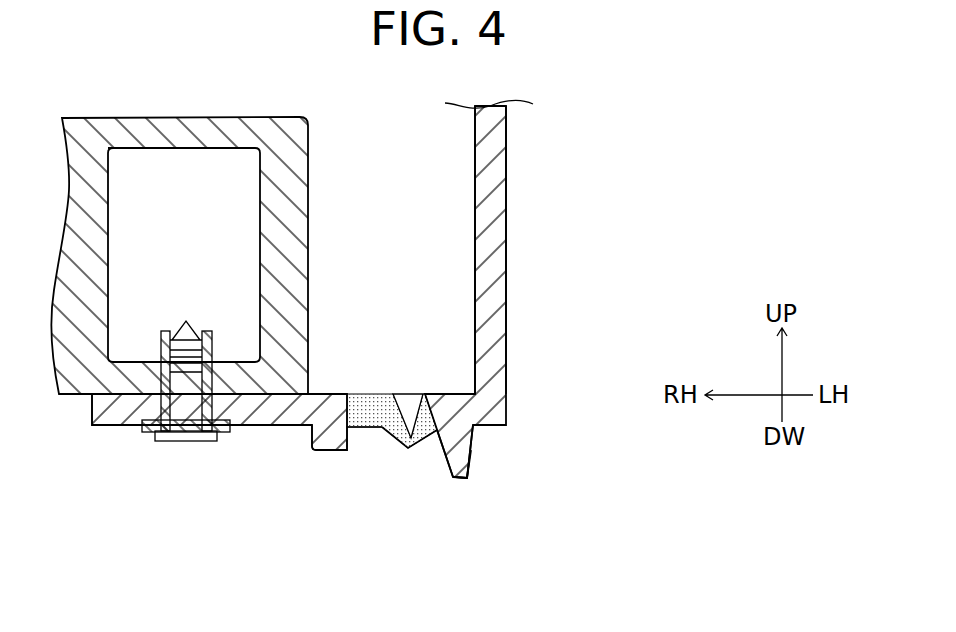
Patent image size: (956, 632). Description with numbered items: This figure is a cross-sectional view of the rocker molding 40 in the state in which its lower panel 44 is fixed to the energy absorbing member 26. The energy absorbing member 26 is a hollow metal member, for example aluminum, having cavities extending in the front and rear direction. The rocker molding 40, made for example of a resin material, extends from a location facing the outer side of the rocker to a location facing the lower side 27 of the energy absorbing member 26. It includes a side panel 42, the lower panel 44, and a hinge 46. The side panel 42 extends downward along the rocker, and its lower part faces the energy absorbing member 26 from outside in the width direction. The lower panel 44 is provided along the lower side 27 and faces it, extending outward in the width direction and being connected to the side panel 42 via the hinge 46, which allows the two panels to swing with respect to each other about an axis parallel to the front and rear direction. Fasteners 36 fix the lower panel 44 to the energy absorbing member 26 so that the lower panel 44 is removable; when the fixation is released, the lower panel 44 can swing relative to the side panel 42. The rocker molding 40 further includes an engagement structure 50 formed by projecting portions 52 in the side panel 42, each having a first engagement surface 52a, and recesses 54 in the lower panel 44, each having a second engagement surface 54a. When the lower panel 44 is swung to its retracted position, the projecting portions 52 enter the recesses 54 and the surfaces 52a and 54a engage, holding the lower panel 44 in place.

The energy absorbing member 26 is at (293, 137).
The lower side 27 is at (264, 498).
The fastener 36 is at (185, 428).
The rocker molding 40 is at (562, 325).
The side panel 42 is at (492, 265).
The lower panel 44 is at (112, 420).
The hinge 46 is at (413, 397).
The engagement structure 50 is at (411, 501).
The projecting portion 52 is at (468, 483).
The first engagement surface 52a is at (480, 461).
The recess 54 is at (374, 392).
The second engagement surface 54a is at (352, 435).